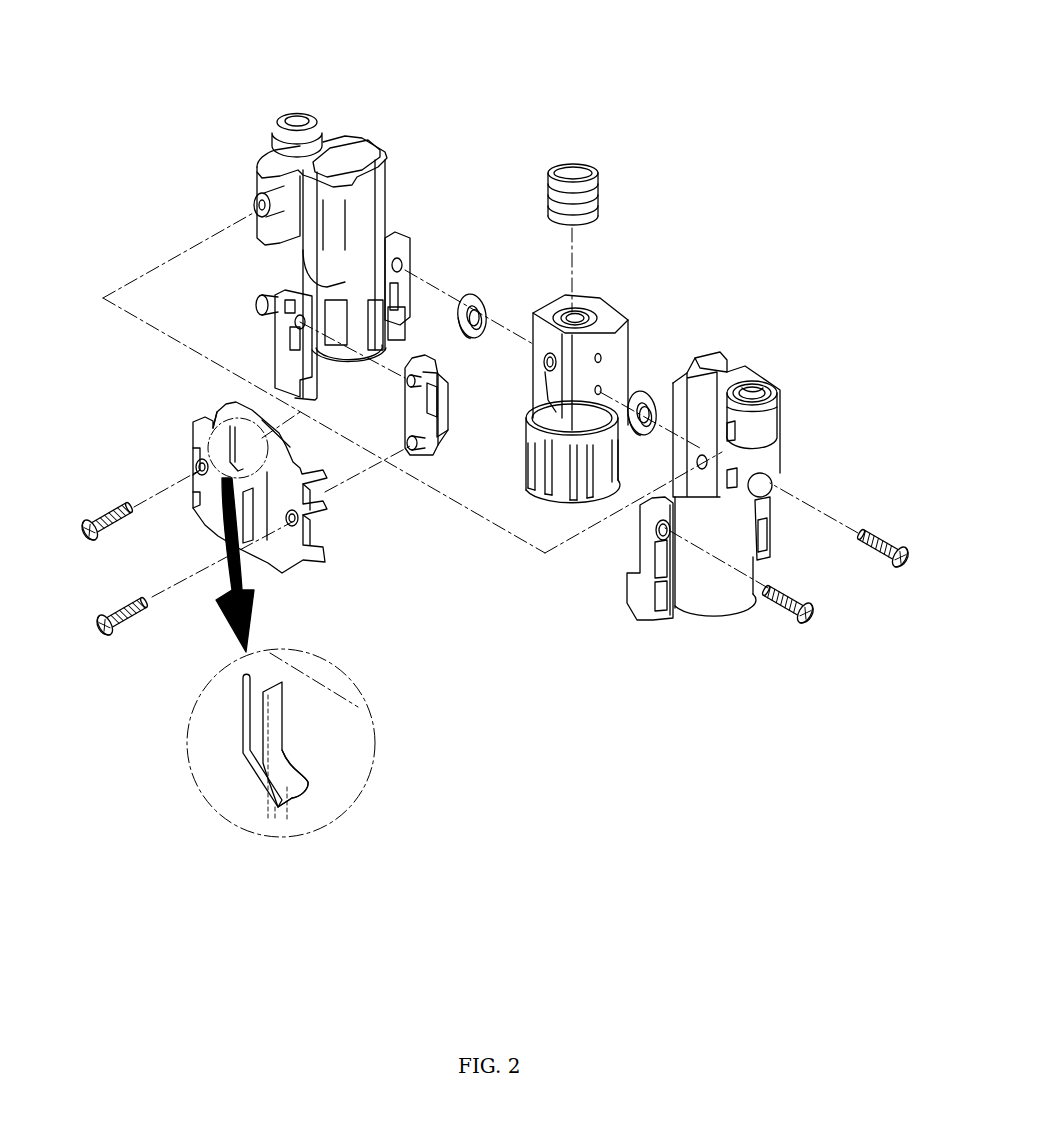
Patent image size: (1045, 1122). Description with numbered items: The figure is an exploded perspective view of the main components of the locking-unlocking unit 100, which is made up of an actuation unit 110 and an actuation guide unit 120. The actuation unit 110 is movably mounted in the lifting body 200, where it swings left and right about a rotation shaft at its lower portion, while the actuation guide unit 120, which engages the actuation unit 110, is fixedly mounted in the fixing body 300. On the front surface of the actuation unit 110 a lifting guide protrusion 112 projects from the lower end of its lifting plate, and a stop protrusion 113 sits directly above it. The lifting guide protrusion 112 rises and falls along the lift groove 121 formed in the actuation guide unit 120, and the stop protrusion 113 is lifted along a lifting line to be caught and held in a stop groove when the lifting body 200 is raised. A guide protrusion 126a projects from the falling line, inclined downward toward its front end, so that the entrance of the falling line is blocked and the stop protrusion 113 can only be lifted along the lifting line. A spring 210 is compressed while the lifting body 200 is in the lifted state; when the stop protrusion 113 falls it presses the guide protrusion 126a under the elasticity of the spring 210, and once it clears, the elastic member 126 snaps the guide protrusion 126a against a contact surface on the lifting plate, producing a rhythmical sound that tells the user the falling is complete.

The locking-unlocking unit 100 is at (522, 597).
The actuation unit 110 is at (431, 463).
The lifting guide protrusion 112 is at (410, 450).
The stop protrusion 113 is at (403, 387).
The actuation guide unit 120 is at (317, 574).
The lift groove 121 is at (203, 573).
The elastic member 126 is at (250, 760).
The guide protrusion 126a is at (317, 780).
The lifting body 200 is at (624, 300).
The spring 210 is at (604, 162).
The fixing body 300 is at (383, 132).